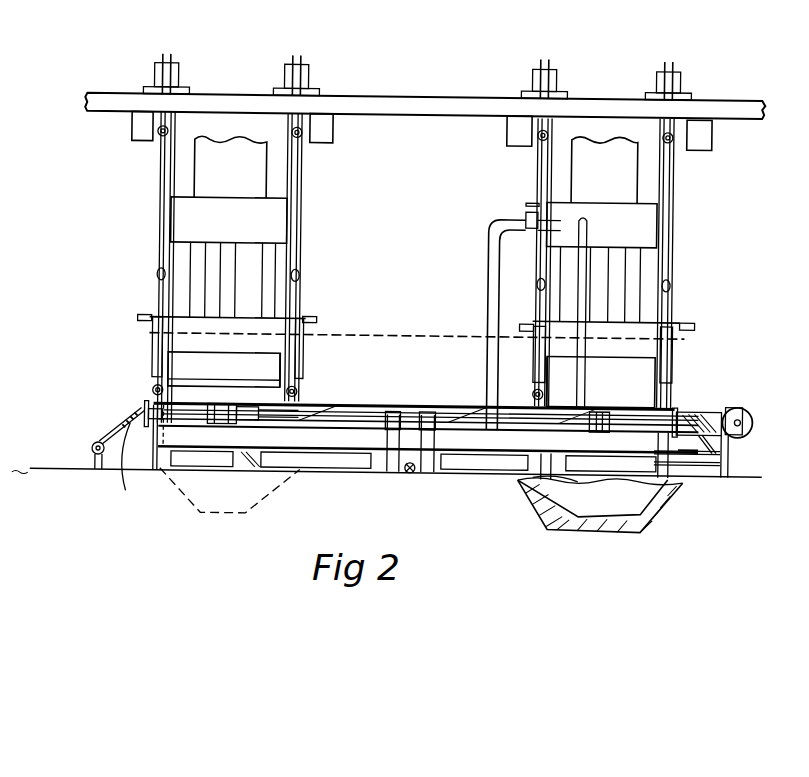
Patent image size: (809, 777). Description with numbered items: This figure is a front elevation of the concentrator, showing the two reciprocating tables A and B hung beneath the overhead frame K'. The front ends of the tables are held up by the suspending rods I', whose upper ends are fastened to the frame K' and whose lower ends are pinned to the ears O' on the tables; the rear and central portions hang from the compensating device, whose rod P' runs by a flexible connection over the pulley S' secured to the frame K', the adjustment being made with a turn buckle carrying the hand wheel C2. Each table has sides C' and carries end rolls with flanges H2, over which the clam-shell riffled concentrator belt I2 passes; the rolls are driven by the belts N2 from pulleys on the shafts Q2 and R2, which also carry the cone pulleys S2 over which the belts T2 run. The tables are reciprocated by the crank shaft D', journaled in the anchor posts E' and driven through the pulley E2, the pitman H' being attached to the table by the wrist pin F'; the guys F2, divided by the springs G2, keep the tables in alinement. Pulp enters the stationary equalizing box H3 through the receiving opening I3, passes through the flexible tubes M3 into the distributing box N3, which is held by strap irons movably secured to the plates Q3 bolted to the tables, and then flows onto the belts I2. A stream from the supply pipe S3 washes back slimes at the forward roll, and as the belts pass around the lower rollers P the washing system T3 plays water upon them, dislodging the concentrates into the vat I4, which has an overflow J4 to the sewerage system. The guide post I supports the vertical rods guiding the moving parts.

The frame K' is at (425, 106).
The pulley S' is at (424, 71).
The guide post I is at (148, 267).
The suspending rod I' is at (491, 260).
The washing system T3 is at (258, 173).
The receiving opening I3 is at (628, 175).
The equalizing box H3 is at (282, 214).
The flexible tube M3 is at (266, 291).
The supply pipe S3 is at (582, 381).
The distributing box N3 is at (163, 324).
The plate Q3 is at (150, 334).
The hand wheel C2 is at (310, 321).
The cone pulley S2 is at (340, 337).
The flange H2 is at (170, 361).
The concentrator belt I2 is at (301, 355).
The reciprocating table A is at (415, 382).
The ear O' is at (228, 380).
The reciprocating table B is at (533, 388).
The belt N2 is at (147, 404).
The roller P is at (130, 410).
The guy F2 is at (110, 436).
The spring G2 is at (720, 392).
The shaft Q2 is at (353, 417).
The shaft R2 is at (450, 420).
The belt T2 is at (237, 430).
The overflow J4 is at (259, 470).
The vat I4 is at (650, 502).
The pitman H' is at (690, 426).
The pulley E2 is at (753, 401).
The crank shaft D' is at (755, 443).
The anchor post E' is at (731, 450).
The rod P' is at (686, 432).
The wrist pin F' is at (688, 459).
The table side C' is at (687, 466).